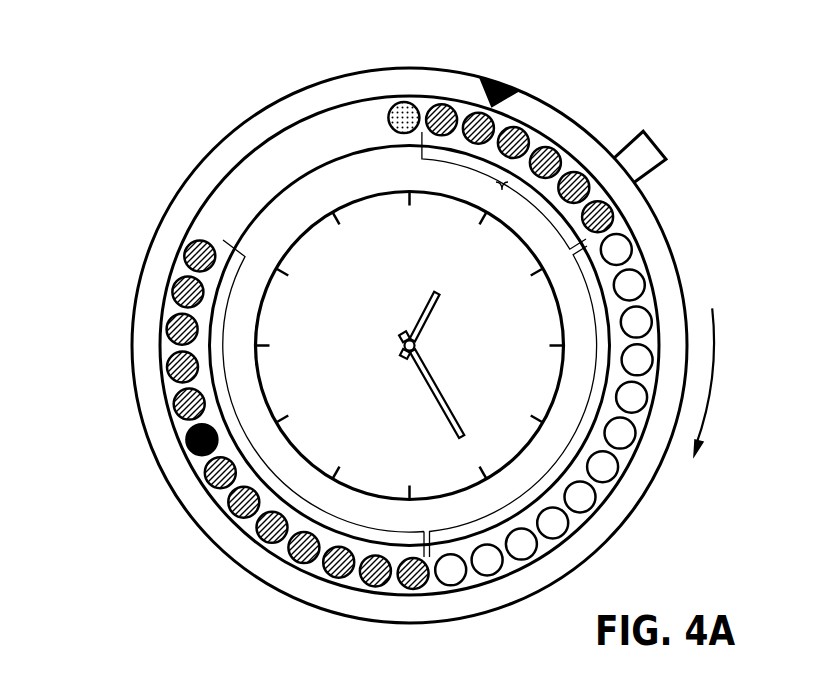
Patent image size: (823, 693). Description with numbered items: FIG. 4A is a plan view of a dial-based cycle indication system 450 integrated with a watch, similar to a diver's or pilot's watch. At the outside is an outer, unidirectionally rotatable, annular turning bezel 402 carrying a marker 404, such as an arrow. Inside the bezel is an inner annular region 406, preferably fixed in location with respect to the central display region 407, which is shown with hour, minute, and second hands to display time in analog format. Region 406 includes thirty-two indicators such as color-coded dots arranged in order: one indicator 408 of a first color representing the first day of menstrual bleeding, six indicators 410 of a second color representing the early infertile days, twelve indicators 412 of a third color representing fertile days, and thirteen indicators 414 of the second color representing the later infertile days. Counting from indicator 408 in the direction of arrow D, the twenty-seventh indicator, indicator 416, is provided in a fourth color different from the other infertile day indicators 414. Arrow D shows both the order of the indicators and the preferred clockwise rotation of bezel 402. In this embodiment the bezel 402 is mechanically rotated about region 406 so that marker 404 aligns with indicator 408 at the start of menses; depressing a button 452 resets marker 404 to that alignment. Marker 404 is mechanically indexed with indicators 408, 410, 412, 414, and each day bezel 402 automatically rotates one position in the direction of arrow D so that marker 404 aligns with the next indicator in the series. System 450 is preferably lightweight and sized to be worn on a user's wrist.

The system 450 is at (133, 82).
The turning bezel 402 is at (666, 259).
The marker 404 is at (502, 82).
The inner annular region 406 is at (343, 127).
The central display region 407 is at (302, 215).
The indicator 408 is at (403, 134).
The indicators 410 is at (517, 176).
The indicators 412 is at (582, 420).
The indicators 414 is at (261, 451).
The indicator 416 is at (187, 449).
The button 452 is at (650, 151).
The arrow D is at (725, 382).